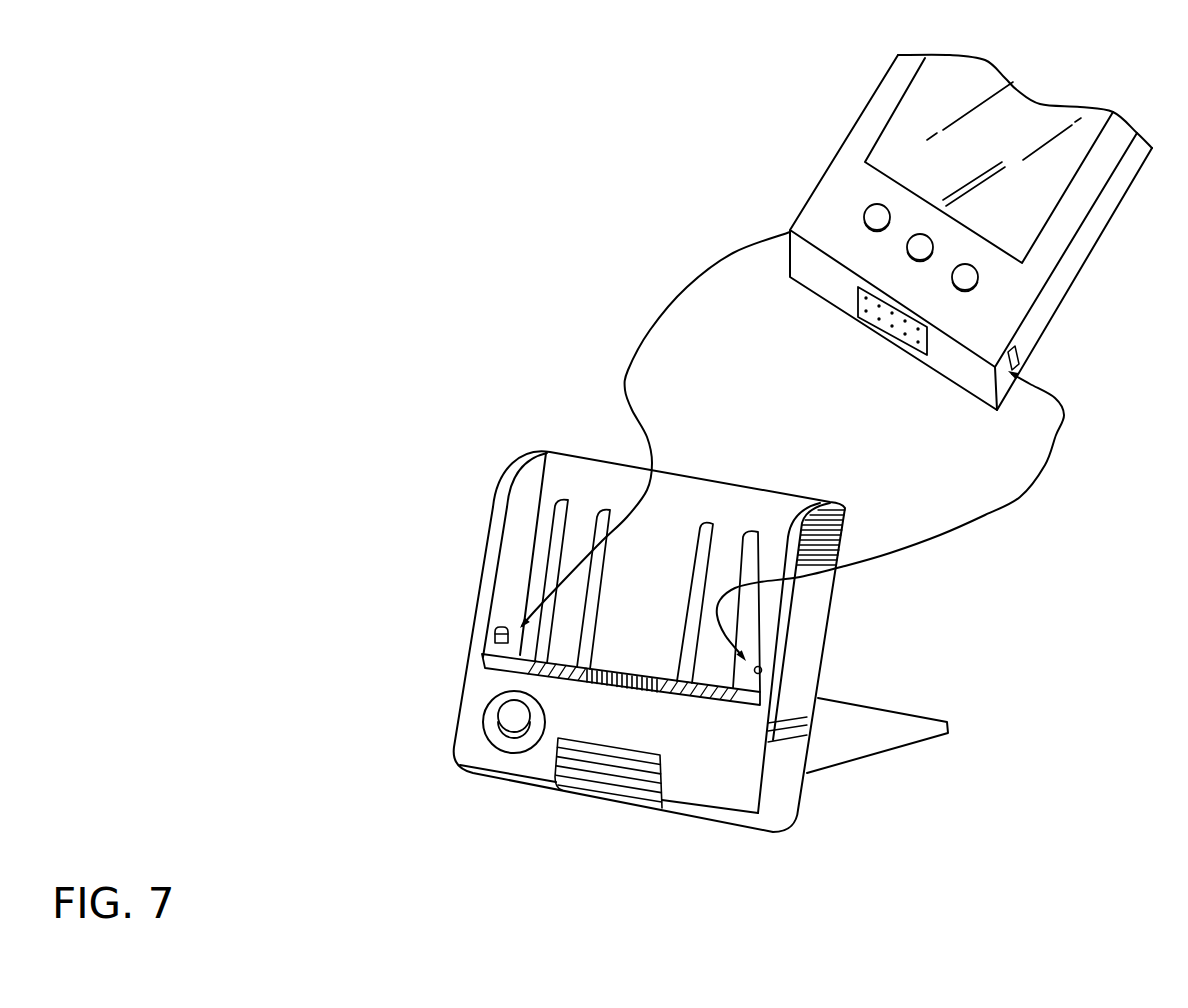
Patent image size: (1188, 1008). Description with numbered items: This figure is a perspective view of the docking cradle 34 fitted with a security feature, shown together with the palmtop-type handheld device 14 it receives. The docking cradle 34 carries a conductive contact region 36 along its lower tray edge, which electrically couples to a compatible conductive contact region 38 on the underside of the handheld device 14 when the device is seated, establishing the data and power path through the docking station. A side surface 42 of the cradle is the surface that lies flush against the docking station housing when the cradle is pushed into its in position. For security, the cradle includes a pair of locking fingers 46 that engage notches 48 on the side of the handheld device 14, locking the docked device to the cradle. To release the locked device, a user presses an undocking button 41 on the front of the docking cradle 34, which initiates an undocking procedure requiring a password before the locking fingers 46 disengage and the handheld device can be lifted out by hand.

The palmtop-type handheld device 14 is at (836, 158).
The notches 48 is at (790, 222).
The conductive contact region 38 is at (900, 350).
The docking cradle 34 is at (777, 493).
The conductive contact region 36 is at (632, 688).
The undocking button 41 is at (505, 738).
The side surface 42 is at (828, 583).
The locking fingers 46 is at (498, 627).